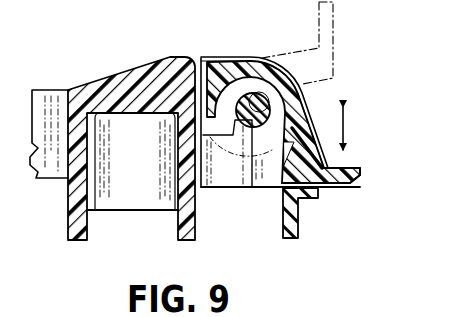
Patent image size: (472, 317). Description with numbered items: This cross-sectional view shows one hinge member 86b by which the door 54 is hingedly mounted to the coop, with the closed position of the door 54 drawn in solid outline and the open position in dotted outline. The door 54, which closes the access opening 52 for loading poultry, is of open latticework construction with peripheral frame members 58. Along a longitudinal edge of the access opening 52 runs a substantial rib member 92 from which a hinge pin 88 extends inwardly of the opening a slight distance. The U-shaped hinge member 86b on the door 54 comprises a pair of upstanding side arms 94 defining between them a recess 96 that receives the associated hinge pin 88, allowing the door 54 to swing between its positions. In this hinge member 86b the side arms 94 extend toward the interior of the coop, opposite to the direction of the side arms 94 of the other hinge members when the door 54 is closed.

The rib member 92 is at (108, 77).
The side arms 94 is at (288, 110).
The recess 96 is at (247, 76).
The hinge pin 88 is at (247, 165).
The U-shaped hinge member 86b is at (258, 52).
The peripheral frame member 58 is at (345, 186).
The access opening 52 is at (327, 190).
The door 54 is at (344, 162).